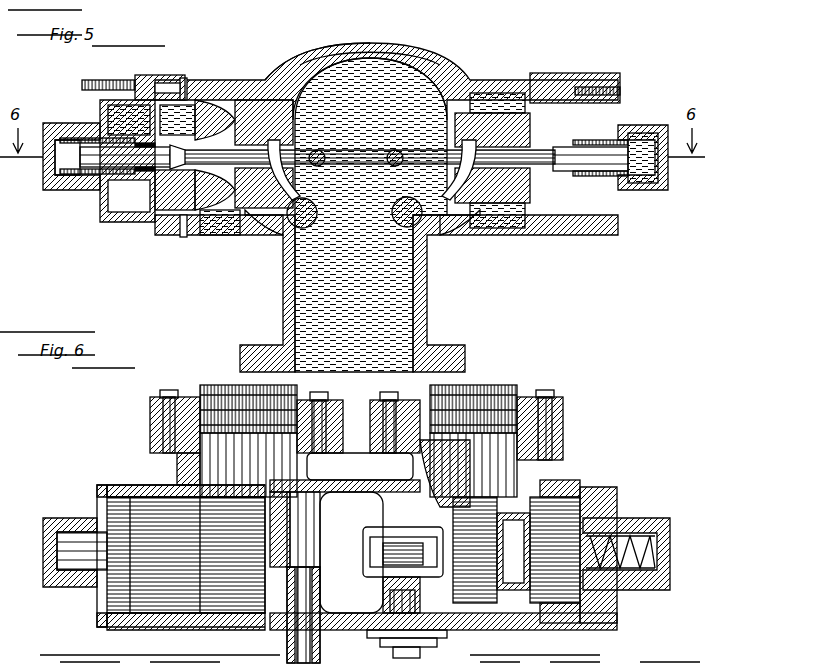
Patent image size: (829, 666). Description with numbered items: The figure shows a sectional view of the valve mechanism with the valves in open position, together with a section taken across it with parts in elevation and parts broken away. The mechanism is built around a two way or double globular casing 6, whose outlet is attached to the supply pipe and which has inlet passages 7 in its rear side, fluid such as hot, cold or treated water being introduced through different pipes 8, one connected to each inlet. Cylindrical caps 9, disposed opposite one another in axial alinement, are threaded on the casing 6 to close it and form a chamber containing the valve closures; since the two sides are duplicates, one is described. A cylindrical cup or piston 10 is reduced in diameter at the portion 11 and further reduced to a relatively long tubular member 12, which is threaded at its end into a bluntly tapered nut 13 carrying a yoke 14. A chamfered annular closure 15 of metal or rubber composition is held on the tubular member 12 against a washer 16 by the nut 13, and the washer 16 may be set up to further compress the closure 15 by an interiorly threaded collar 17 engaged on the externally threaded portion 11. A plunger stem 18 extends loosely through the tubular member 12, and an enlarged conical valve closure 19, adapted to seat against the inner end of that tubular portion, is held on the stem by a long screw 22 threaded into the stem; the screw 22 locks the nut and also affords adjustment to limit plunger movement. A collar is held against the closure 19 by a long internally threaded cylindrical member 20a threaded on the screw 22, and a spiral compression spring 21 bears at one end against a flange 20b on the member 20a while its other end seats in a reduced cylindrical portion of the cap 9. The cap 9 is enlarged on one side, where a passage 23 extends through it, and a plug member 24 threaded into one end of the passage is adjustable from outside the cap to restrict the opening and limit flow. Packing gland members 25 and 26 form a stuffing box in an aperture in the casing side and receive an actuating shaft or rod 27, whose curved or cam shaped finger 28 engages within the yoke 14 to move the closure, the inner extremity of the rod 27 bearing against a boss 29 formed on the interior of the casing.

In FIG. 5, the casing 6 is at (405, 66).
In FIG. 6, the casing 6 is at (347, 482).
In FIG. 6, the inlet passages 7 is at (235, 455).
In FIG. 6, the pipes 8 is at (205, 388).
In FIG. 5, the cylindrical caps 9 is at (97, 185).
In FIG. 6, the cylindrical caps 9 is at (70, 518).
In FIG. 5, the cylindrical cup or piston 10 is at (103, 115).
In FIG. 6, the cylindrical cup or piston 10 is at (577, 520).
In FIG. 5, the reduced portion 11 is at (175, 210).
In FIG. 5, the tubular member 12 is at (213, 236).
In FIG. 5, the bluntly tapered nut 13 is at (283, 85).
In FIG. 5, the yoke 14 is at (327, 52).
In FIG. 6, the yoke 14 is at (405, 548).
In FIG. 5, the annular closure 15 is at (240, 96).
In FIG. 6, the annular closure 15 is at (467, 515).
In FIG. 5, the washer 16 is at (210, 92).
In FIG. 5, the interiorly threaded collar 17 is at (183, 95).
In FIG. 6, the interiorly threaded collar 17 is at (512, 553).
In FIG. 5, the plunger stem 18 is at (258, 238).
In FIG. 5, the conical valve closure 19 is at (146, 205).
In FIG. 5, the internally threaded cylindrical member 20a is at (100, 192).
In FIG. 5, the flange 20b is at (140, 206).
In FIG. 5, the spiral compression spring 21 is at (120, 200).
In FIG. 6, the spiral compression spring 21 is at (655, 522).
In FIG. 5, the long screw 22 is at (57, 178).
In FIG. 5, the passage 23 is at (148, 86).
In FIG. 5, the plug member 24 is at (112, 68).
In FIG. 6, the packing gland member 25 is at (328, 645).
In FIG. 6, the packing gland member 26 is at (375, 632).
In FIG. 5, the actuating shaft or rod 27 is at (335, 215).
In FIG. 6, the actuating shaft or rod 27 is at (323, 585).
In FIG. 5, the curved or cam shaped finger 28 is at (420, 176).
In FIG. 6, the curved or cam shaped finger 28 is at (432, 483).
In FIG. 6, the boss 29 is at (365, 530).